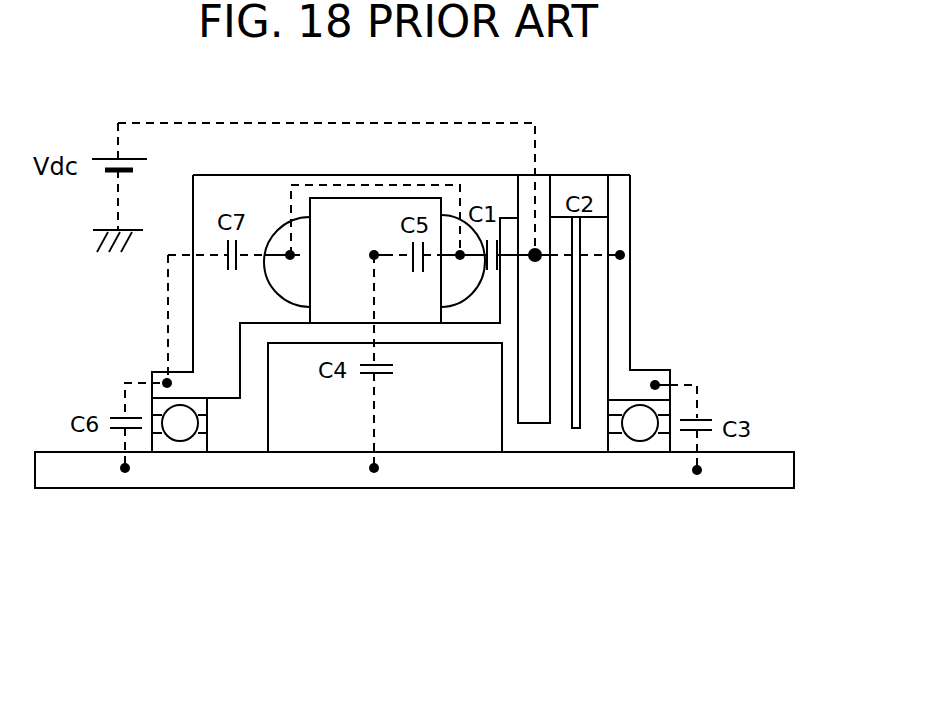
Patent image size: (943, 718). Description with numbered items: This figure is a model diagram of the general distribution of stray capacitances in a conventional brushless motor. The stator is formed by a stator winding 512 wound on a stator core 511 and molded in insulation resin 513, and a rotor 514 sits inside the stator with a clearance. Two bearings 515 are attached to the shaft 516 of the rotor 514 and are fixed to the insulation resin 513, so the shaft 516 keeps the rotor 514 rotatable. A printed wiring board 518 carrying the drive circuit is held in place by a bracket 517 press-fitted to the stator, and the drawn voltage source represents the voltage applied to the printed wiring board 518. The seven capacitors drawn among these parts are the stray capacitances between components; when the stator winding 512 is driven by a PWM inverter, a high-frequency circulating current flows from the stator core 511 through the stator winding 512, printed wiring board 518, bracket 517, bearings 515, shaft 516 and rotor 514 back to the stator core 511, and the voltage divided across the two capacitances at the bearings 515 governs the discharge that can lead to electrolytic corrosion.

The stator core 511 is at (367, 217).
The stator winding 512 is at (301, 227).
The insulation resin 513 is at (220, 192).
The rotor 514 is at (455, 400).
The bearings 515 is at (637, 423).
The shaft 516 is at (758, 477).
The bracket 517 is at (620, 283).
The printed wiring board 518 is at (538, 392).